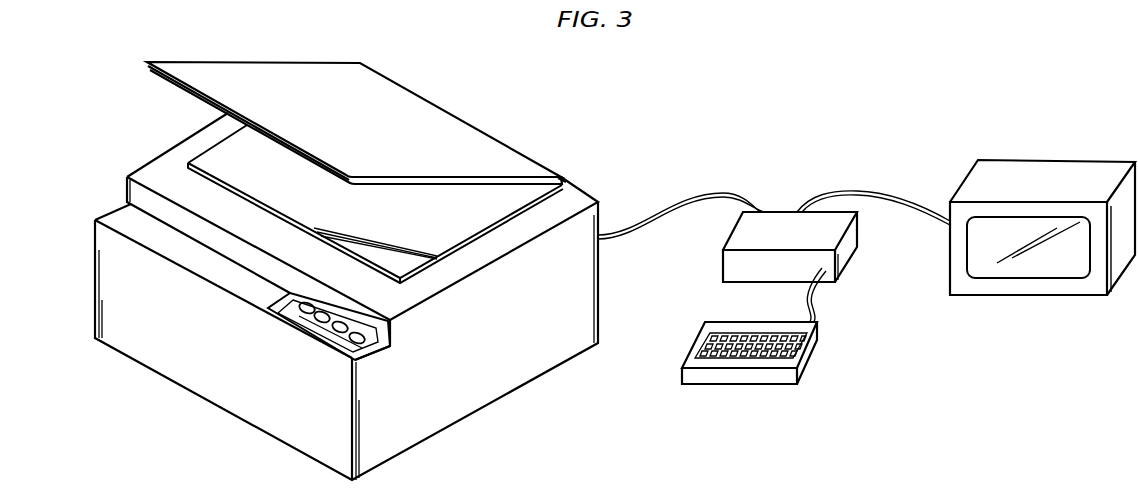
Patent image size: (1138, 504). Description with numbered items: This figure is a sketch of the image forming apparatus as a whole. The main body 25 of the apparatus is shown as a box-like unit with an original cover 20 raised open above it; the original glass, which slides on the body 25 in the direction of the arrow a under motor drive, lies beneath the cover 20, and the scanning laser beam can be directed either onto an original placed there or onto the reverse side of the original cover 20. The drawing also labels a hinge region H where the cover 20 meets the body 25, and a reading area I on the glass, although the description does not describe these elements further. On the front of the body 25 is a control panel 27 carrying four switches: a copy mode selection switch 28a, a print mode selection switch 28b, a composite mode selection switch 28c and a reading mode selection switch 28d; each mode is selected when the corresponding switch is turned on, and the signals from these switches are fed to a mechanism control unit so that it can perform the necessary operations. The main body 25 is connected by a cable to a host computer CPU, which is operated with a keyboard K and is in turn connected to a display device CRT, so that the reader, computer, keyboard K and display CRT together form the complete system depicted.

The original cover 20 is at (465, 137).
The hinge H is at (563, 181).
The image reading glass platen I is at (462, 223).
The direction of arrow a is at (476, 296).
The operation panel 27 is at (277, 303).
The copy mode selection switch 28a is at (304, 326).
The print mode selection switch 28b is at (330, 341).
The composite mode selection switch 28c is at (351, 353).
The reading mode selection switch 28d is at (298, 311).
The main body of the image forming apparatus 25 is at (473, 402).
The host computer CPU is at (790, 247).
The display device CRT is at (1042, 227).
The keyboard K is at (767, 385).